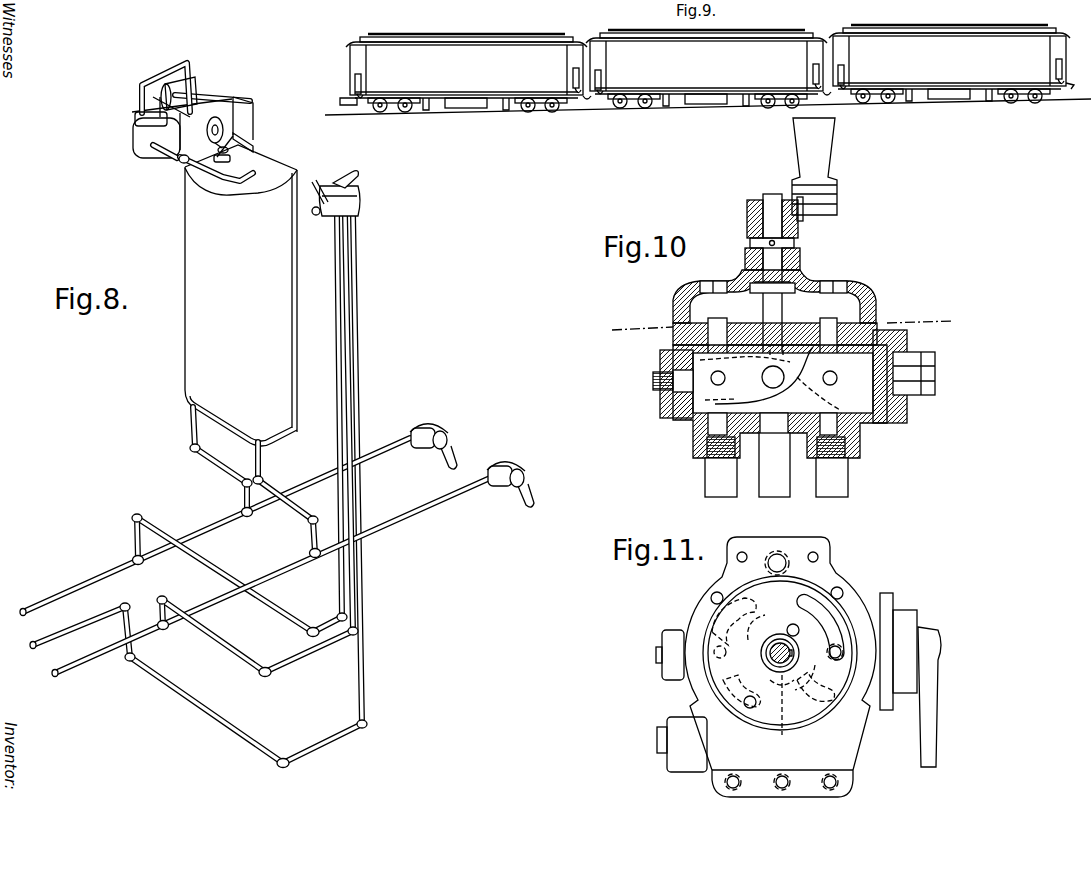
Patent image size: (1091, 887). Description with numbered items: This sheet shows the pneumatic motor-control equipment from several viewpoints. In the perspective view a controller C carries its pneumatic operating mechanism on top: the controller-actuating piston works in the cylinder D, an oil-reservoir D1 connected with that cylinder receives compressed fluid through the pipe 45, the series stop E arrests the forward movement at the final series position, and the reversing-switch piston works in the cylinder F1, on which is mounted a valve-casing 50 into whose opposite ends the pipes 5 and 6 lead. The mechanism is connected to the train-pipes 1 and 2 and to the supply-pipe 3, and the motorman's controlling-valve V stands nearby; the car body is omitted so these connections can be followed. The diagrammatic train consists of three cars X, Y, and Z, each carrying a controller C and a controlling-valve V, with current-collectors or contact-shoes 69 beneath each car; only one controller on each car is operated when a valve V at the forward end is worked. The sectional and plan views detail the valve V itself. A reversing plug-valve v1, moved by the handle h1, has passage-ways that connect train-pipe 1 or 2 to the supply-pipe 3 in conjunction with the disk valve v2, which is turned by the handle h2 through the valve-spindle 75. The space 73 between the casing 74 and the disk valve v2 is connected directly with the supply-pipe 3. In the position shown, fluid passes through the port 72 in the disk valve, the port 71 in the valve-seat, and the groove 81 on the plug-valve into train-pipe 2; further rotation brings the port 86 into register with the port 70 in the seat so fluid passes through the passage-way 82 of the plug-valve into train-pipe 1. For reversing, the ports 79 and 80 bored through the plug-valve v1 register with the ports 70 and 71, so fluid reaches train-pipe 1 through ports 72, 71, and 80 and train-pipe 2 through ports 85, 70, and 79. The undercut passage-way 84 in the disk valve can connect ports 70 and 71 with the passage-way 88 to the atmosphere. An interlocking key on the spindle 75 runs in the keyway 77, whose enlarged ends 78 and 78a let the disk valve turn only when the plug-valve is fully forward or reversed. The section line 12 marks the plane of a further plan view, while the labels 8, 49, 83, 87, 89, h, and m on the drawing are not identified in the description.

In FIG. 8, the train-pipe 1 is at (226, 650).
In FIG. 10, the train-pipe 1 is at (832, 467).
In FIG. 8, the train-pipe 2 is at (220, 526).
In FIG. 10, the train-pipe 2 is at (721, 467).
In FIG. 8, the supply-pipe 3 is at (74, 628).
In FIG. 10, the supply-pipe 3 is at (774, 465).
In FIG. 8, the pipe 5 is at (168, 72).
In FIG. 8, the pipe 6 is at (260, 463).
In FIG. 8, the bar 8 is at (226, 100).
In FIG. 10, the section line 12 is at (782, 328).
In FIG. 8, the pipe 45 is at (162, 160).
In FIG. 8, the pipe 49 is at (190, 168).
In FIG. 8, the valve-casing 50 is at (152, 121).
In FIG. 9, the current-collectors or contact-shoes 69 is at (505, 111).
In FIG. 10, the port in valve-seat 70 is at (716, 338).
In FIG. 11, the port in valve-seat 70 is at (707, 650).
In FIG. 10, the port in valve-seat 71 is at (870, 316).
In FIG. 11, the port in valve-seat 71 is at (853, 653).
In FIG. 10, the port in disk valve 72 is at (850, 310).
In FIG. 11, the port in disk valve 72 is at (788, 653).
In FIG. 10, the space or chamber 73 is at (800, 296).
In FIG. 10, the casing 74 is at (832, 300).
In FIG. 10, the valve-spindle 75 is at (776, 268).
In FIG. 11, the valve-spindle 75 is at (790, 660).
In FIG. 10, the keyway 77 is at (761, 380).
In FIG. 10, the enlarged end of keyway 78 is at (768, 383).
In FIG. 10, the enlarged end of keyway 78a is at (755, 365).
In FIG. 10, the port 79 is at (716, 386).
In FIG. 10, the port 80 is at (838, 378).
In FIG. 10, the groove or passage-way 81 is at (812, 364).
In FIG. 10, the passage-way 82 is at (739, 373).
In FIG. 11, the hole 83 is at (786, 560).
In FIG. 11, the undercut passage-way 84 is at (710, 620).
In FIG. 11, the port 85 is at (752, 708).
In FIG. 11, the port 86 is at (745, 700).
In FIG. 11, the slot 87 is at (797, 632).
In FIG. 11, the passage-way 88 is at (783, 717).
In FIG. 11, the bolt hole 89 is at (813, 585).
In FIG. 8, the controller C is at (241, 295).
In FIG. 9, the controller C is at (573, 84).
In FIG. 8, the cylinder D is at (228, 113).
In FIG. 8, the oil-reservoir D1 is at (198, 94).
In FIG. 8, the series stop E is at (249, 140).
In FIG. 8, the cylinder F1 is at (143, 142).
In FIG. 8, the motorman's controlling-valve V is at (333, 213).
In FIG. 9, the motorman's controlling-valve V is at (363, 79).
In FIG. 11, the motorman's controlling-valve V is at (667, 704).
In FIG. 9, the car X is at (461, 73).
In FIG. 9, the car Y is at (701, 65).
In FIG. 9, the car Z is at (955, 59).
In FIG. 11, the handle h is at (932, 716).
In FIG. 8, the handle h1 is at (318, 180).
In FIG. 10, the handle h1 is at (930, 356).
In FIG. 8, the handle h2 is at (352, 172).
In FIG. 10, the handle h2 is at (836, 156).
In FIG. 8, the valve fitting m is at (450, 432).
In FIG. 10, the reversing plug-valve v1 is at (854, 393).
In FIG. 10, the disk valve v2 is at (727, 306).
In FIG. 11, the disk valve v2 is at (730, 590).